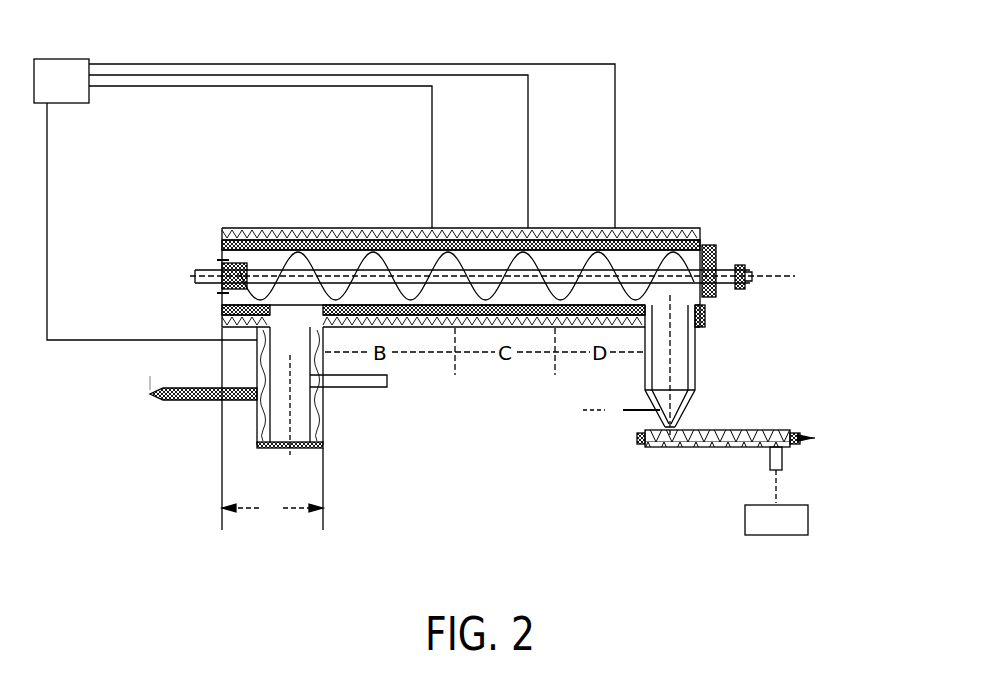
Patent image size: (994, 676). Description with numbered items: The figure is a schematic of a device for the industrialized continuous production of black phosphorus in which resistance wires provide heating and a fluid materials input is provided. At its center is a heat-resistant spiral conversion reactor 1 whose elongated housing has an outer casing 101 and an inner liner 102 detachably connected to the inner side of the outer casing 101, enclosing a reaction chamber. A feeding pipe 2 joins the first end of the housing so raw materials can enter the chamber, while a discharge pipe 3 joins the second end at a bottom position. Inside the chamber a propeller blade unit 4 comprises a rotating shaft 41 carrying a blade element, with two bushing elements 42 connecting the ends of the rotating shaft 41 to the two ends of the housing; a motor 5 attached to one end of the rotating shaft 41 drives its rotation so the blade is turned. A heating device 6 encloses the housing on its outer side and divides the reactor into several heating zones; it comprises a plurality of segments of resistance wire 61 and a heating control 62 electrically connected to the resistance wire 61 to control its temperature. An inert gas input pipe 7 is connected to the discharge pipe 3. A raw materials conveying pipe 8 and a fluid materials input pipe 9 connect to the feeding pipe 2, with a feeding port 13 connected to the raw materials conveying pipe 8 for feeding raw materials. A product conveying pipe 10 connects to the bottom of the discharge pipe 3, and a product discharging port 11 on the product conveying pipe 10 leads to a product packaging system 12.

The heat-resistant spiral conversion reactor 1 is at (392, 230).
The outer casing 101 is at (312, 232).
The inner liner 102 is at (365, 240).
The feeding pipe 2 is at (288, 410).
The discharge pipe 3 is at (697, 353).
The propeller blade unit 4 is at (470, 240).
The rotating shaft 41 is at (570, 272).
The bushing 42 is at (232, 268).
The motor 5 is at (752, 270).
The heating device 6 is at (704, 230).
The resistance wire 61 is at (652, 226).
The heating control 62 is at (62, 80).
The inert gas input pipe 7 is at (630, 415).
The raw materials conveying pipe 8 is at (207, 400).
The fluid materials input pipe 9 is at (348, 388).
The product conveying pipe 10 is at (763, 426).
The product discharging port 11 is at (785, 460).
The product packaging system 12 is at (780, 520).
The feeding port 13 is at (150, 380).